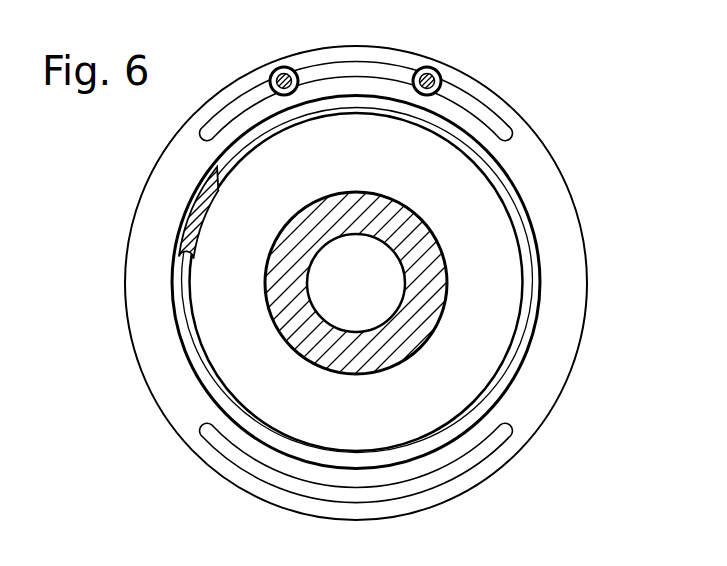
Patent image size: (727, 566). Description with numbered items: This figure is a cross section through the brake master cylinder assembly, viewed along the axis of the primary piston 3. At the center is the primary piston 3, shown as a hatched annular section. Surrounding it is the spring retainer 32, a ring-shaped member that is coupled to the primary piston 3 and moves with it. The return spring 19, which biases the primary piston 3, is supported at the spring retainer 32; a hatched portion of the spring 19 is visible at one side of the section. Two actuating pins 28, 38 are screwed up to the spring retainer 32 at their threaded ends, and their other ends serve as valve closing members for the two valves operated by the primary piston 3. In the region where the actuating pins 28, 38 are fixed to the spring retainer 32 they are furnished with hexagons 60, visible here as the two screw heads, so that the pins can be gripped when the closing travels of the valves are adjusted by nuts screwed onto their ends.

The primary piston 3 is at (430, 300).
The return spring 19 is at (196, 202).
The actuating pin 28 is at (441, 66).
The spring retainer 32 is at (557, 222).
The actuating pin 38 is at (271, 69).
The hexagons 60 is at (286, 67).